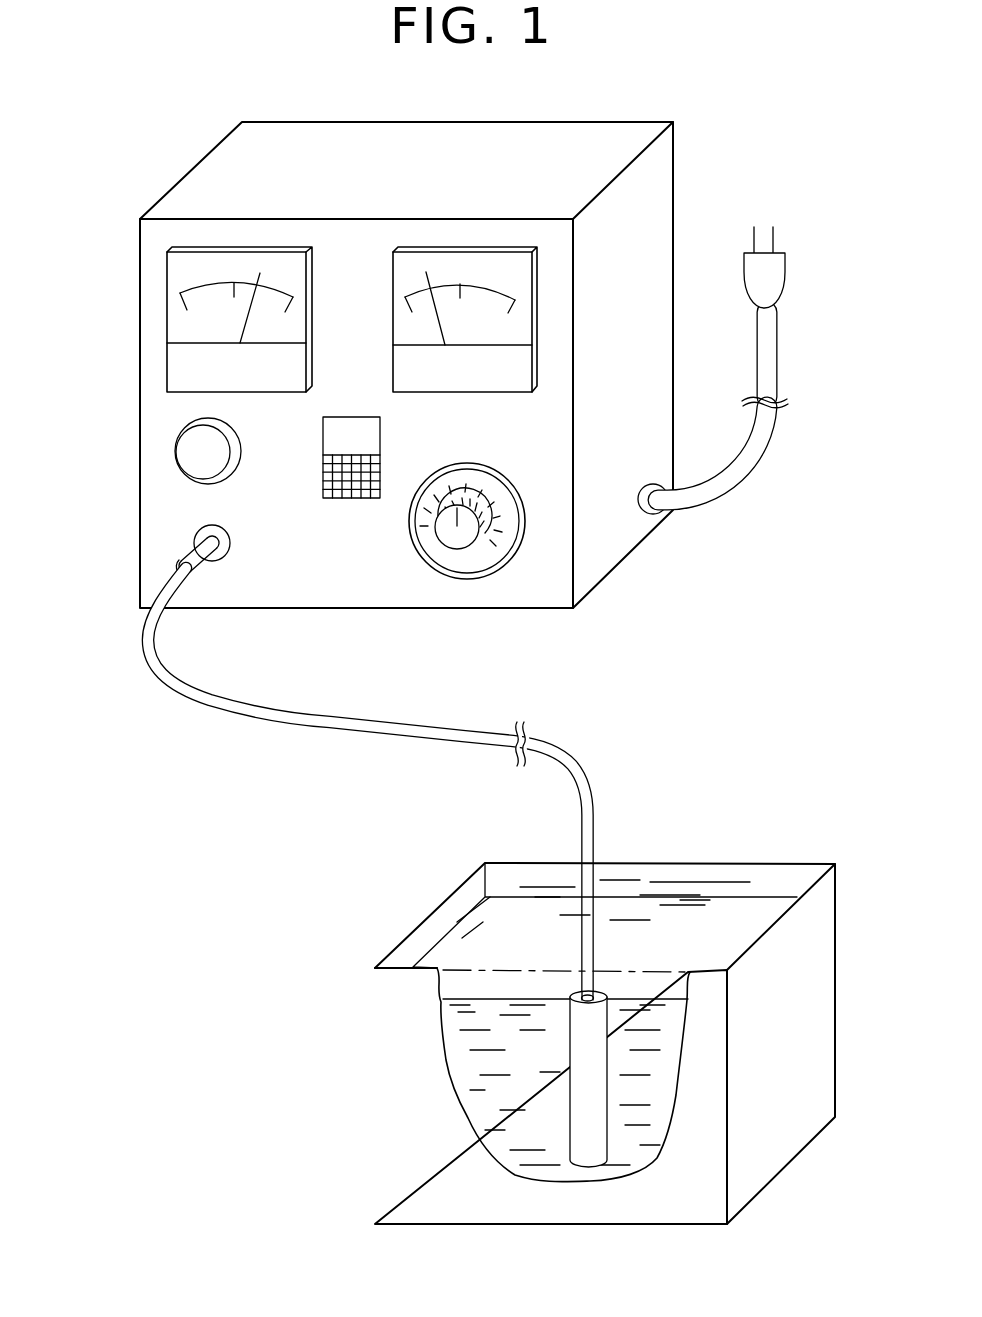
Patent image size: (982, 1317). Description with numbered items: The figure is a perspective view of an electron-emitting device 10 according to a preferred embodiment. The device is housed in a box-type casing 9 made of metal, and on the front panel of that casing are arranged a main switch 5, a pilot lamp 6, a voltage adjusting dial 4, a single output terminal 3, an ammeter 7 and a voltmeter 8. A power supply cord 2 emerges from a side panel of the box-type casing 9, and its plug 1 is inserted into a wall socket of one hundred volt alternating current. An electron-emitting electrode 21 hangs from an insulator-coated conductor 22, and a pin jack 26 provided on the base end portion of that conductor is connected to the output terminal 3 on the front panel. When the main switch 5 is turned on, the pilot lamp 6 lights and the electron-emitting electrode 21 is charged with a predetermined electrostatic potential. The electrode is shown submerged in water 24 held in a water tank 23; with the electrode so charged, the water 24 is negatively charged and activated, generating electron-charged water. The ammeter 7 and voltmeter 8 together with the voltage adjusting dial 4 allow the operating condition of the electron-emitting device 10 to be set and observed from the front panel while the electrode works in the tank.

The plug 1 is at (778, 277).
The power supply cord 2 is at (722, 488).
The output terminal 3 is at (233, 547).
The voltage adjusting dial 4 is at (460, 540).
The main switch 5 is at (382, 472).
The pilot lamp 6 is at (193, 447).
The ammeter 7 is at (475, 258).
The voltmeter 8 is at (245, 258).
The box-type casing 9 is at (660, 348).
The electron-emitting device 10 is at (682, 208).
The electron-emitting electrode 21 is at (577, 1085).
The insulator-coated conductor 22 is at (335, 725).
The water tank 23 is at (378, 1018).
The water 24 is at (470, 947).
The pin jack 26 is at (202, 557).